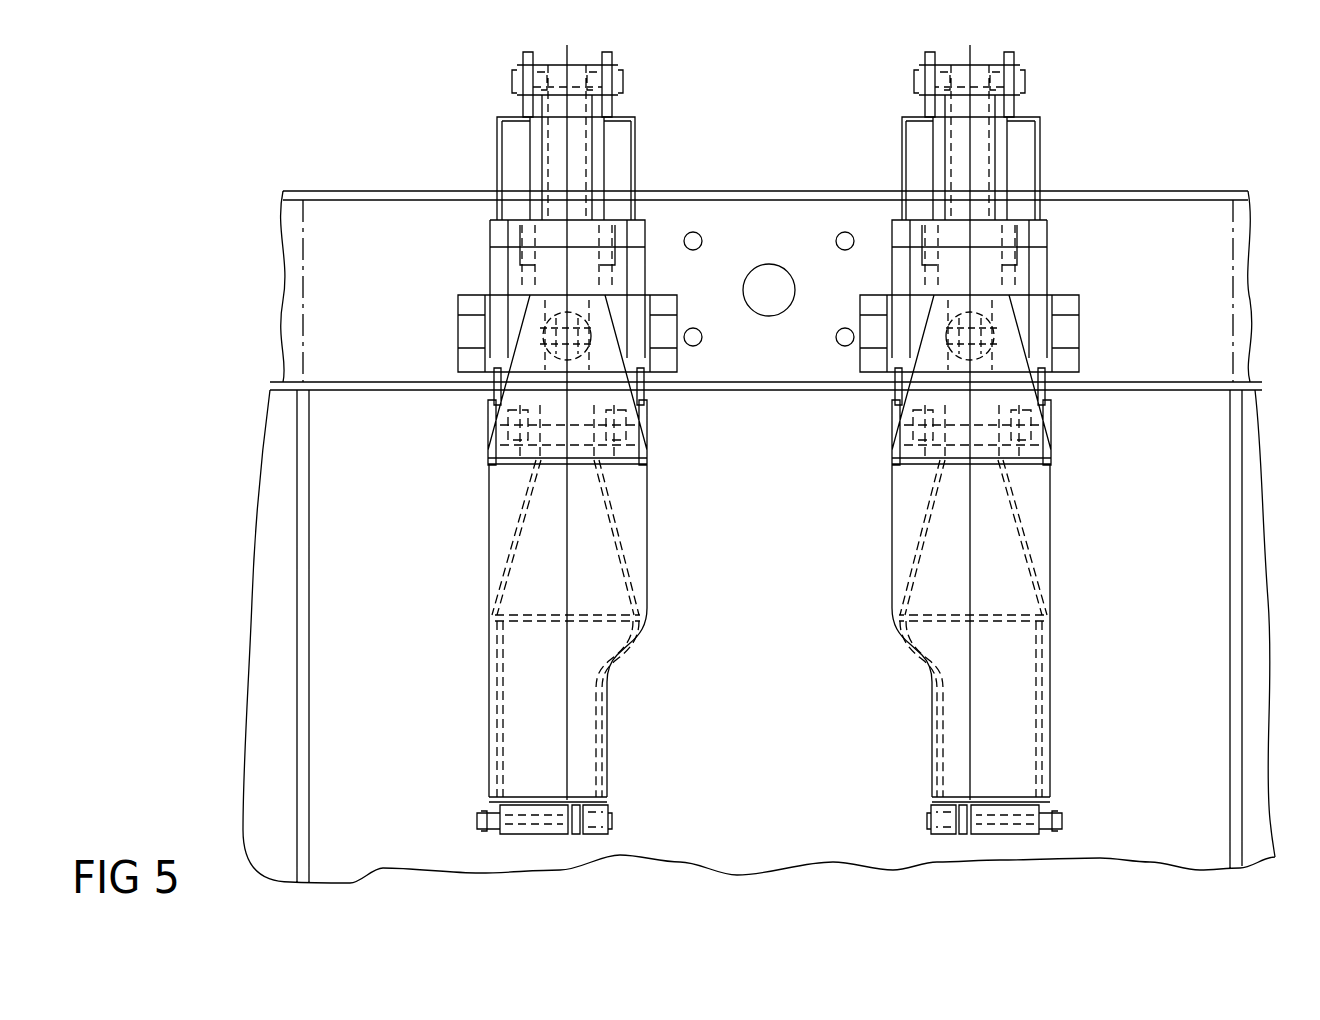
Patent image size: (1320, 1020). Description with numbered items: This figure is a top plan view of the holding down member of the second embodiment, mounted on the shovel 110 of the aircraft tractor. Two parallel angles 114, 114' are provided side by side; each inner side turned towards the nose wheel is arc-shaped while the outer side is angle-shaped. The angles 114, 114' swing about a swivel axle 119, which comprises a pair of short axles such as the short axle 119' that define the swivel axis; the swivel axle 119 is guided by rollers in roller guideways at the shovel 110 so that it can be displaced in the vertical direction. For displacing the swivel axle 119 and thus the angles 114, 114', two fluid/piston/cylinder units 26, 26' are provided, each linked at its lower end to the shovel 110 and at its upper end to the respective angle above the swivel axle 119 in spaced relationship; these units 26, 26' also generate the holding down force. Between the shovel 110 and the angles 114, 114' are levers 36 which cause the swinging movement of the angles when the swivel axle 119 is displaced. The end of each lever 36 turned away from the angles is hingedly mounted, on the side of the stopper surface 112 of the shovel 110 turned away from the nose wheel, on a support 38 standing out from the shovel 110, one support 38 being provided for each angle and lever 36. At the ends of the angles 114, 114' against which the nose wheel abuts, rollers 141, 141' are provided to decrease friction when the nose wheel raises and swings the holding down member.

The shovel 110 is at (367, 685).
The stopper surface 112 is at (1153, 390).
The angle 114 is at (1103, 548).
The angle 114' is at (413, 548).
The swivel axle 119 is at (1083, 333).
The short axle 119' is at (448, 333).
The fluid/piston/cylinder unit 26 is at (1127, 299).
The fluid/piston/cylinder unit 26' is at (406, 287).
The lever 36 is at (557, 188).
The support 38 is at (1040, 145).
The roller 141 is at (521, 861).
The roller 141' is at (987, 860).